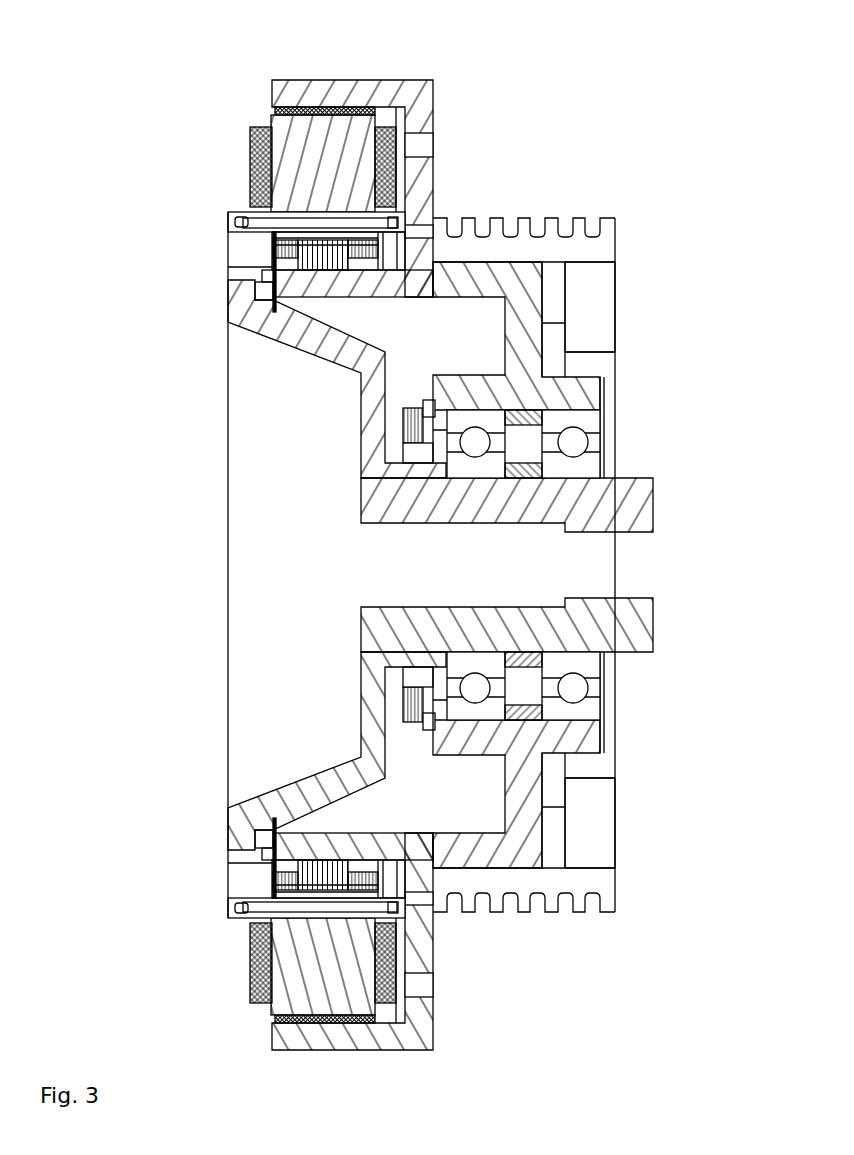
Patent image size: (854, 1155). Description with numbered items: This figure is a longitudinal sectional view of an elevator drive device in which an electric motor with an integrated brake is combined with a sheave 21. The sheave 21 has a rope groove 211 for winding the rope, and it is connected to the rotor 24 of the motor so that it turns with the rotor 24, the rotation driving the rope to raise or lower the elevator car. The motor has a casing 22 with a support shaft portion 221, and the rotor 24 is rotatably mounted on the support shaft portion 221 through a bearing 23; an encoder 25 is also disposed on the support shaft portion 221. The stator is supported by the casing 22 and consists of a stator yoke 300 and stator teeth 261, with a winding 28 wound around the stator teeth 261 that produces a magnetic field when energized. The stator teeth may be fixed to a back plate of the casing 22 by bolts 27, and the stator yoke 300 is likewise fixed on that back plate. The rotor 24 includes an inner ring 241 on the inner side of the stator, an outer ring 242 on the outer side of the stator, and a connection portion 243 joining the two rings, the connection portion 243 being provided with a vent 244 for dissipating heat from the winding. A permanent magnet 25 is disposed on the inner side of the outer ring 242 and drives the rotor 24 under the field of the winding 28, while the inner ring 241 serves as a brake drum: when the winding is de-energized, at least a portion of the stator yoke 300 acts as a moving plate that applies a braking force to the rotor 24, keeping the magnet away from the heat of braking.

The sheave 21 is at (503, 252).
The rope groove 211 is at (560, 224).
The casing 22 is at (252, 322).
The support shaft portion 221 is at (577, 508).
The bearing 23 is at (565, 463).
The rotor 24 is at (543, 290).
The inner ring 241 is at (342, 288).
The outer ring 242 is at (328, 88).
The connection portion 243 is at (435, 207).
The vent 244 is at (410, 180).
The permanent magnet 25 is at (308, 110).
The stator teeth 261 is at (300, 152).
The bolts 27 is at (250, 207).
The winding 28 is at (250, 155).
The stator yoke 300 is at (272, 246).